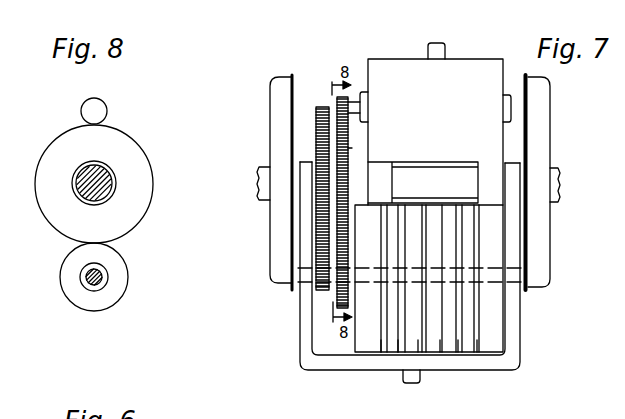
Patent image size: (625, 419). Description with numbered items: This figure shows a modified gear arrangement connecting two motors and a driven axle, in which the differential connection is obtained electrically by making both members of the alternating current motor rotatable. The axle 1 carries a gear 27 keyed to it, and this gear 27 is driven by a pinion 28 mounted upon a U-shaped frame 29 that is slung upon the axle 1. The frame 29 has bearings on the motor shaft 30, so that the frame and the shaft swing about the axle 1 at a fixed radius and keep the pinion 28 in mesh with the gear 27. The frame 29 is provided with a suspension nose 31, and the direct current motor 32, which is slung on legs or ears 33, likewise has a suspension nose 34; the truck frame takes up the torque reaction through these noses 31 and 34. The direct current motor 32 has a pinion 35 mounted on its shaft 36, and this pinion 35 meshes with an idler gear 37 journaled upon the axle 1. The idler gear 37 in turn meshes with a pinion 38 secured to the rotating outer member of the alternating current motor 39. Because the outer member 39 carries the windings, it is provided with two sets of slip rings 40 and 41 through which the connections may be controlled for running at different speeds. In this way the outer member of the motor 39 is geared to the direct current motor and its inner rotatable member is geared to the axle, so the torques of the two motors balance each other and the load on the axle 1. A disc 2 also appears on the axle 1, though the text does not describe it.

In FIG. 8, the axle 1 is at (82, 170).
In FIG. 7, the axle 1 is at (556, 168).
In FIG. 7, the disc 2 is at (543, 118).
In FIG. 7, the gear 27 is at (322, 107).
In FIG. 7, the pinion 28 is at (320, 292).
In FIG. 7, the frame 29 is at (307, 343).
In FIG. 8, the motor shaft 30 is at (107, 275).
In FIG. 7, the motor shaft 30 is at (307, 279).
In FIG. 7, the suspension nose 31 is at (411, 380).
In FIG. 7, the direct current motor 32 is at (398, 70).
In FIG. 7, the legs or ears 33 is at (392, 183).
In FIG. 7, the suspension nose 34 is at (438, 53).
In FIG. 8, the pinion 35 is at (103, 112).
In FIG. 7, the pinion 35 is at (340, 97).
In FIG. 7, the shaft 36 is at (355, 98).
In FIG. 8, the idler gear 37 is at (142, 186).
In FIG. 7, the idler gear 37 is at (352, 150).
In FIG. 8, the pinion 38 is at (110, 298).
In FIG. 7, the pinion 38 is at (337, 296).
In FIG. 7, the alternating current motor 39 is at (492, 320).
In FIG. 7, the slip rings 40 is at (478, 353).
In FIG. 7, the slip rings 41 is at (418, 353).